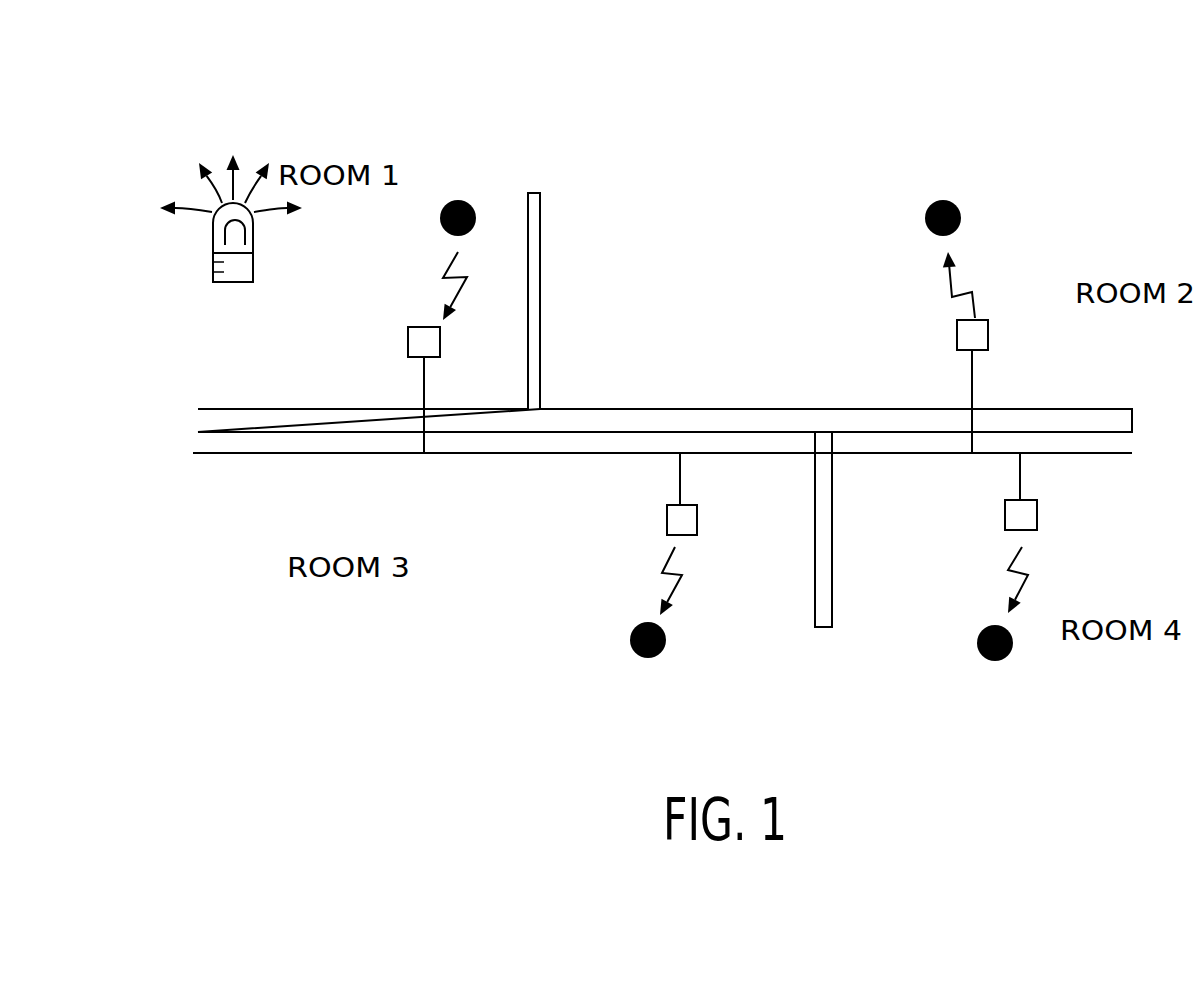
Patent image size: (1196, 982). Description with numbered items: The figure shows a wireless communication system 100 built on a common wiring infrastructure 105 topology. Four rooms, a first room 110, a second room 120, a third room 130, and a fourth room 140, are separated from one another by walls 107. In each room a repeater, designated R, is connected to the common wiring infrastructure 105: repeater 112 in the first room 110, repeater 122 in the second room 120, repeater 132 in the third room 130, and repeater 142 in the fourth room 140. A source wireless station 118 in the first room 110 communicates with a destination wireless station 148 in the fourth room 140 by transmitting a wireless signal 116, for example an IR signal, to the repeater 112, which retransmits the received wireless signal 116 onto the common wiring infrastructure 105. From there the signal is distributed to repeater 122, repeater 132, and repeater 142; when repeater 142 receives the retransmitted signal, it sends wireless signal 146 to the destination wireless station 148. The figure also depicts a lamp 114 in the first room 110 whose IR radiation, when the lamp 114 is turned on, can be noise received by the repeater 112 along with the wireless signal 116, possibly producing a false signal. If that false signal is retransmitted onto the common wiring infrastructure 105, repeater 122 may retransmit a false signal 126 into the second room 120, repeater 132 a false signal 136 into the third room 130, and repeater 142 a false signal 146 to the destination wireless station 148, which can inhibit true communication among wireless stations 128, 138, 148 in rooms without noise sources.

The wireless communication system 100 is at (1032, 152).
The common wiring infrastructure 105 is at (418, 454).
The walls 107 is at (540, 335).
The first room 110 is at (405, 182).
The repeater 112 is at (408, 338).
The lamp 114 is at (243, 260).
The wireless signal 116 is at (467, 279).
The source wireless station 118 is at (466, 202).
The second room 120 is at (763, 216).
The repeater 122 is at (988, 330).
The false signal 126 is at (972, 292).
The wireless station 128 is at (950, 204).
The third room 130 is at (477, 522).
The repeater 132 is at (697, 522).
The false signal 136 is at (682, 575).
The wireless station 138 is at (635, 648).
The fourth room 140 is at (907, 595).
The repeater 142 is at (1037, 517).
The wireless signal 146 is at (1028, 575).
The destination wireless station 148 is at (1013, 650).